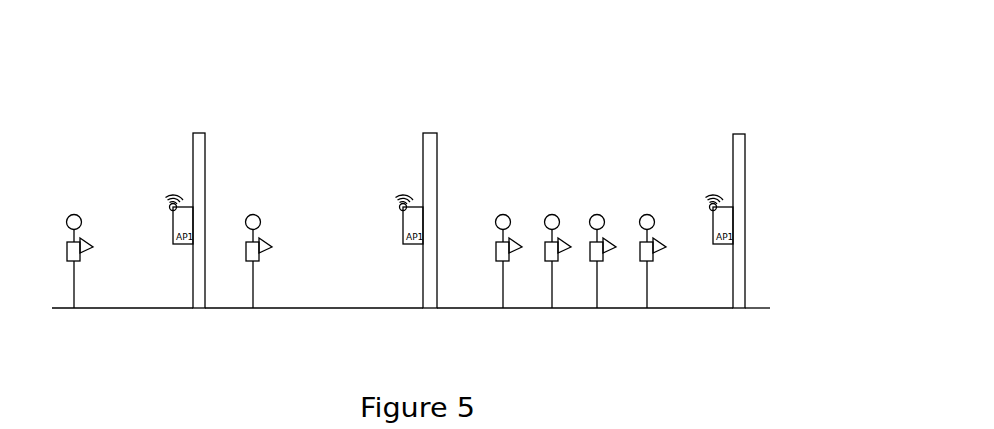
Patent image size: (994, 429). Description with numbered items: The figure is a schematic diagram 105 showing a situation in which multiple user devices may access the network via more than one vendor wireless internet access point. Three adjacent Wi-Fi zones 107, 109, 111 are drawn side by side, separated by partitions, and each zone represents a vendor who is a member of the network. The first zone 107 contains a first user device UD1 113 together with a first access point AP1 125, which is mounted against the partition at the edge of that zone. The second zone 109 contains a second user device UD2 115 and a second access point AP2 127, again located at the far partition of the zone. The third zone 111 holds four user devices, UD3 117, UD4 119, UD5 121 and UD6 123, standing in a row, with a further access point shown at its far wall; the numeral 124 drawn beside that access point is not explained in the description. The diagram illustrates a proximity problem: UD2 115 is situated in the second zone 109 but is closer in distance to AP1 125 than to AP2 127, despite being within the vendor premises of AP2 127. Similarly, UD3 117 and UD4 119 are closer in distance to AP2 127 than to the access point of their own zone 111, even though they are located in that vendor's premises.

The schematic diagram 105 is at (724, 94).
The Wi-Fi zone 107 is at (140, 185).
The Wi-Fi zone 109 is at (360, 179).
The Wi-Fi zone 111 is at (620, 163).
The user device UD1 113 is at (67, 248).
The user device UD2 115 is at (255, 292).
The user device UD3 117 is at (521, 246).
The user device UD4 119 is at (569, 247).
The user device UD5 121 is at (614, 247).
The user device UD6 123 is at (656, 247).
The access point AP1 in Zone 3 124 is at (715, 246).
The wireless internet access point AP1 125 is at (172, 235).
The wireless internet access point AP2 127 is at (403, 235).